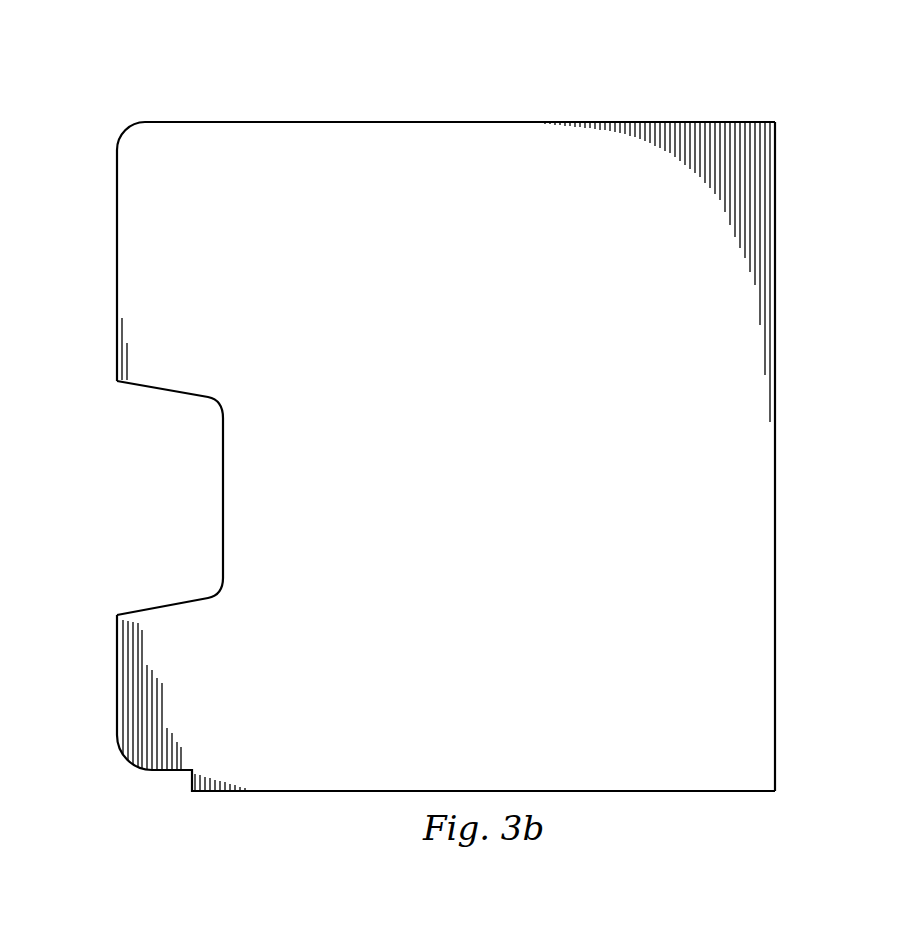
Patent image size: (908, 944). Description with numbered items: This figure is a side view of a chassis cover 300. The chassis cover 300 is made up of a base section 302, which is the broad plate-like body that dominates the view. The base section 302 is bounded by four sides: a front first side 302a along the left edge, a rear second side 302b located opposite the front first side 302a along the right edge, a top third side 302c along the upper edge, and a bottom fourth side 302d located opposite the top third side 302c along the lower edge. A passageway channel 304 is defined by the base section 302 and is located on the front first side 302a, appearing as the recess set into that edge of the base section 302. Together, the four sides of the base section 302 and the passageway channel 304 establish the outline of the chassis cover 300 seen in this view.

The chassis cover 300 is at (678, 78).
The base section 302 is at (495, 471).
The front first side 302a is at (117, 265).
The rear second side 302b is at (776, 622).
The top third side 302c is at (460, 121).
The bottom fourth side 302d is at (678, 792).
The passageway channel 304 is at (103, 378).